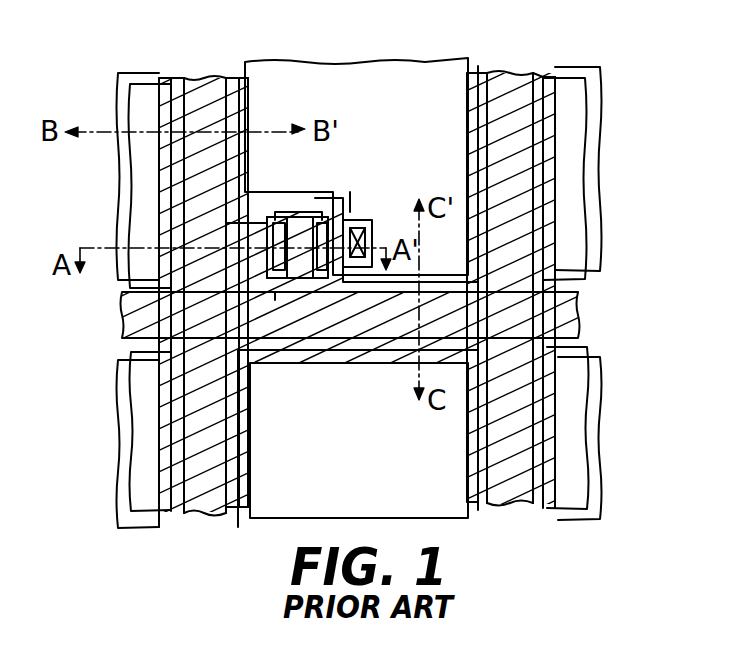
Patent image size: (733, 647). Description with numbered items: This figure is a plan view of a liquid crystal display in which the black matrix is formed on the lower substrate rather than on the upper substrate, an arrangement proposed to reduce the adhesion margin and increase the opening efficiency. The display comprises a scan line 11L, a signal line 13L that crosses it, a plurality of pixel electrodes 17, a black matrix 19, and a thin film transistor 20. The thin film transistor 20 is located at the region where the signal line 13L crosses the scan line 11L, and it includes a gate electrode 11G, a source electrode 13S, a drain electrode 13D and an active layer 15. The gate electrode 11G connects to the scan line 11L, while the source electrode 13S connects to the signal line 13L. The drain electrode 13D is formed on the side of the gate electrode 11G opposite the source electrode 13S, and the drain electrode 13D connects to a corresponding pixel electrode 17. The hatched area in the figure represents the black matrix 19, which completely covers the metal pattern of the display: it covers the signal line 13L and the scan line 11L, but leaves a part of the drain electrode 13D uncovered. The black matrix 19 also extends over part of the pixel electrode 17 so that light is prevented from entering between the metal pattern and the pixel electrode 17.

The signal line 13L is at (208, 78).
The pixel electrode 17 is at (364, 75).
The black matrix 19 is at (182, 206).
The thin film transistor 20 is at (340, 153).
The source electrode 13S is at (247, 235).
The active layer 15 is at (290, 213).
The gate electrode 11G is at (350, 181).
The drain electrode 13D is at (358, 220).
The scan line 11L is at (568, 305).